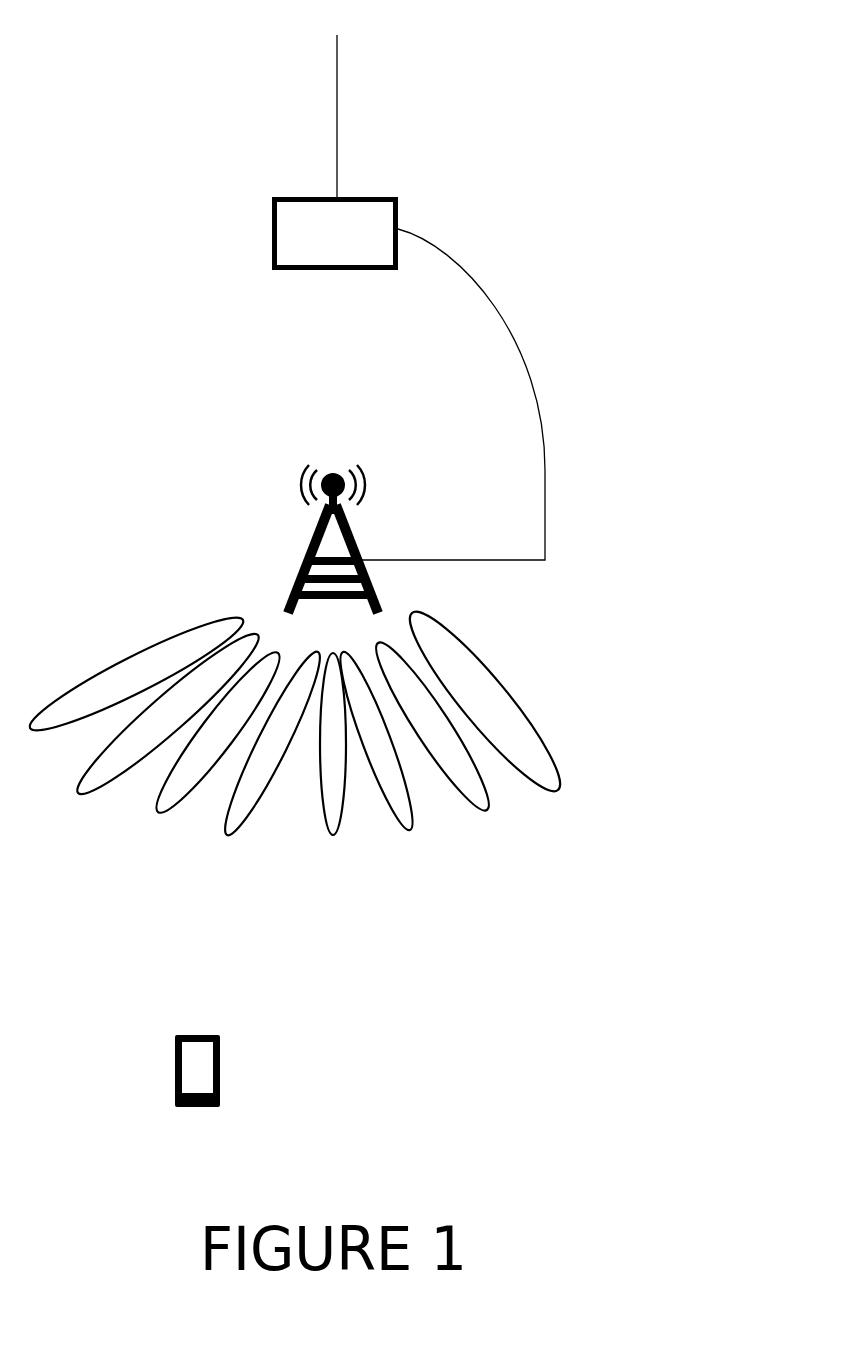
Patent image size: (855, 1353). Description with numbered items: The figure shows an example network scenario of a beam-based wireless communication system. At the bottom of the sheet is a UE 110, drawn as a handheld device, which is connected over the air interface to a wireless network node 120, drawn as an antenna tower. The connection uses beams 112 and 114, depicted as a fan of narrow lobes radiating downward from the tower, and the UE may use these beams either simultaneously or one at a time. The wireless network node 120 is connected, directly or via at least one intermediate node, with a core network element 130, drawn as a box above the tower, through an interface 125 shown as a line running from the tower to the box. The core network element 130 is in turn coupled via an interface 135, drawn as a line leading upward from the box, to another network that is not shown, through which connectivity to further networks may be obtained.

The UE 110 is at (178, 1107).
The beam 112 is at (228, 836).
The beam 114 is at (335, 835).
The wireless network node 120 is at (353, 543).
The interface 125 is at (520, 357).
The core network element 130 is at (358, 250).
The interface 135 is at (337, 142).